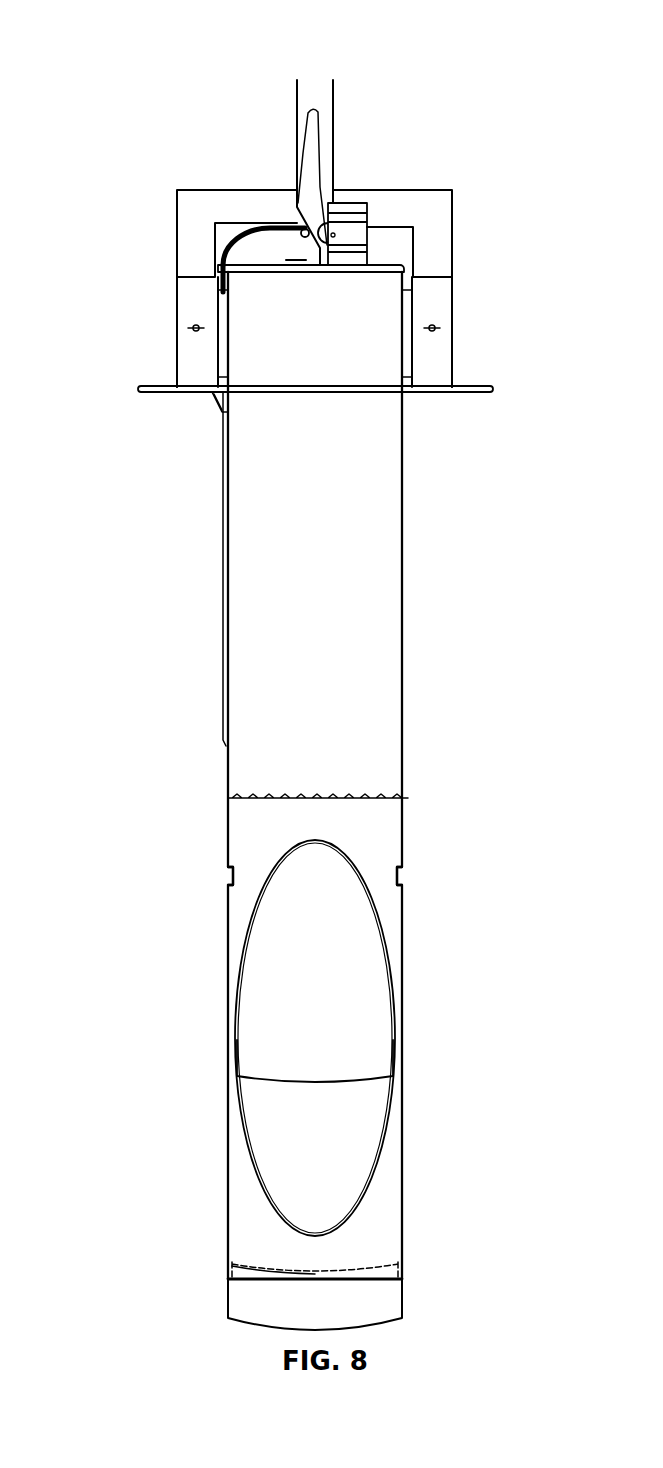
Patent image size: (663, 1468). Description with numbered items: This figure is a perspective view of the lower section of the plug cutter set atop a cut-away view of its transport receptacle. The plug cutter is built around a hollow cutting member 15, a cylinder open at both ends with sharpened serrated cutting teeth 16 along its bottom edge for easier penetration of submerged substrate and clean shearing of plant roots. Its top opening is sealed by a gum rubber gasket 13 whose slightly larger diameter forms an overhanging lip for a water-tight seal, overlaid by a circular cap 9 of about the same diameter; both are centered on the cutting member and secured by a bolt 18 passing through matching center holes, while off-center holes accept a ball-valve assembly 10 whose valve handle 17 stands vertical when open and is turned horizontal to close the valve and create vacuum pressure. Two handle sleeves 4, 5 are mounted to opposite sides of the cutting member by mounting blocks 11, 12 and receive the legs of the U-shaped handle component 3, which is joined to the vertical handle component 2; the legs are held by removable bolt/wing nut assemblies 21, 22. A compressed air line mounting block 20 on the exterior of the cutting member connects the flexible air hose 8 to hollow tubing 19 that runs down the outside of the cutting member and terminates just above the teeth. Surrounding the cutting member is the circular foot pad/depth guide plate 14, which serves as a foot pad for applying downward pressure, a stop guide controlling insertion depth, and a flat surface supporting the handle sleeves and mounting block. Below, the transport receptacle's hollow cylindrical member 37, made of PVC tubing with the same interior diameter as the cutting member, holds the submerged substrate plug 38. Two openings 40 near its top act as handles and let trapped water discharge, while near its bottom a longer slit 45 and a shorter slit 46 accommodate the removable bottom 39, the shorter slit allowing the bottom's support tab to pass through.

The handle component 2 is at (313, 93).
The U-shaped handle component 3 is at (400, 203).
The handle sleeve 4 is at (442, 293).
The handle sleeve 5 is at (195, 292).
The flexible air hose 8 is at (222, 265).
The cap 9 is at (293, 262).
The ball-valve assembly 10 is at (358, 208).
The mounting block 11 is at (225, 357).
The mounting block 12 is at (413, 367).
The gasket 13 is at (218, 233).
The foot pad/depth guide plate 14 is at (468, 387).
The hollow cutting member 15 is at (330, 670).
The serrated cutting teeth 16 is at (345, 796).
The valve handle 17 is at (313, 167).
The bolt 18 is at (306, 235).
The hollow tubing 19 is at (227, 697).
The compressed air line mounting block 20 is at (216, 390).
The bolt/wing nut assembly 21 is at (190, 323).
The bolt/wing nut assembly 22 is at (435, 328).
The hollow cylindrical member of the transport receptacle 37 is at (400, 1213).
The submerged substrate plug 38 is at (365, 1015).
The removable bottom 39 is at (403, 1279).
The openings 40 is at (233, 877).
The longer slit 45 is at (363, 1270).
The shorter slit 46 is at (250, 1270).